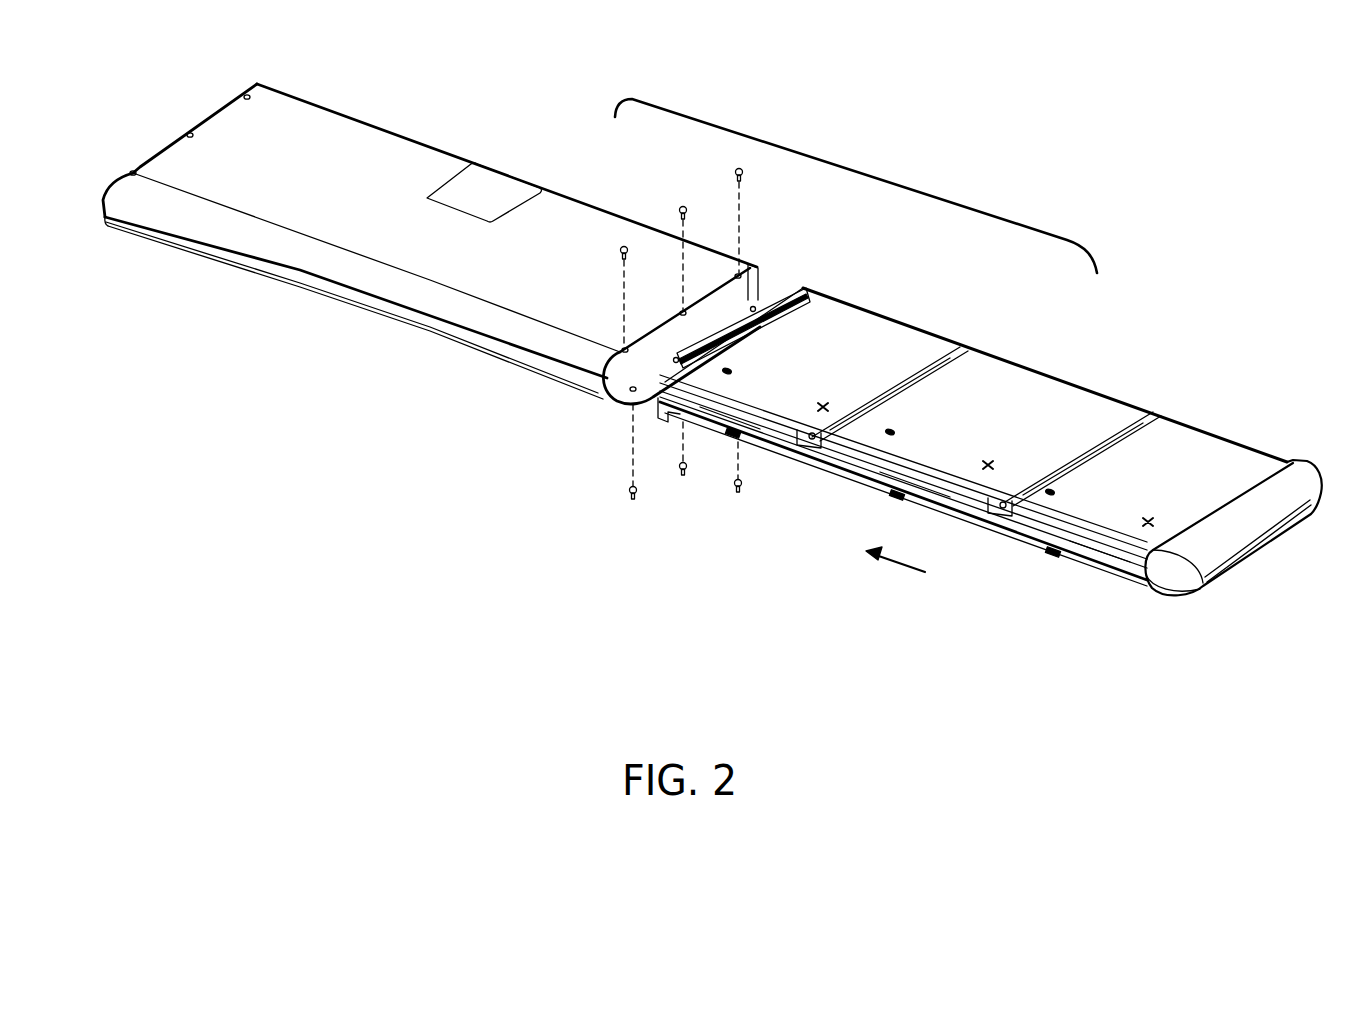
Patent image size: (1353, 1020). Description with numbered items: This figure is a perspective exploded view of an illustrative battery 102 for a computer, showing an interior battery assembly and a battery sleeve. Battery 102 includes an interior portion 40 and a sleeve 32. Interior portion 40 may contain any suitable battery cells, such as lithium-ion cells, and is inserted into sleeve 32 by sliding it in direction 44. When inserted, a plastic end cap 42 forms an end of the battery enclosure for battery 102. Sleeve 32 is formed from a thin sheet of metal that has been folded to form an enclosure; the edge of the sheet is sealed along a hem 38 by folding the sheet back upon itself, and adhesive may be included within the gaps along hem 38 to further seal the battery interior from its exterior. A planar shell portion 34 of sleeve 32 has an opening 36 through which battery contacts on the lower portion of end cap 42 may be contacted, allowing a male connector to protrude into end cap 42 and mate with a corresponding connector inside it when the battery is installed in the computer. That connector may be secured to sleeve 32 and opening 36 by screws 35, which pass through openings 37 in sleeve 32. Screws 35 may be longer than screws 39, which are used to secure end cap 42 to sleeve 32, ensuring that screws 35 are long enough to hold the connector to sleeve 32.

The battery sleeve 32 is at (572, 212).
The planar shell portion 34 is at (617, 397).
The screws 35 is at (683, 474).
The opening 36 is at (740, 319).
The openings 37 is at (755, 308).
The hem 38 is at (520, 372).
The screws 39 is at (624, 247).
The interior portion 40 is at (876, 328).
The plastic end cap 42 is at (1178, 590).
The direction 44 is at (897, 563).
The battery 102 is at (856, 186).